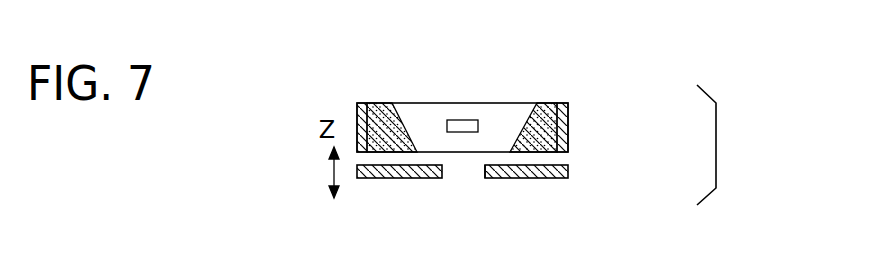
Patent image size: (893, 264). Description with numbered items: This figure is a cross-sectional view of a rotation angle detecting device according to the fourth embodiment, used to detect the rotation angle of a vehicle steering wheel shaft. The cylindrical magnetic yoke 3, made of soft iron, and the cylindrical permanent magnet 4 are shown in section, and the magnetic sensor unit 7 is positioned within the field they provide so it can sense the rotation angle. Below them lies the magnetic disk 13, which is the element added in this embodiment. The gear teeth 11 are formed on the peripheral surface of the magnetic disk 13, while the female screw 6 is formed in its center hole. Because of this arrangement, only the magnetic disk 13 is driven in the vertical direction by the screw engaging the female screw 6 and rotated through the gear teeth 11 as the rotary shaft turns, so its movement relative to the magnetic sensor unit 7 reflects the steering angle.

The cylindrical magnetic yoke 3 is at (568, 122).
The cylindrical permanent magnet 4 is at (548, 112).
The female screw 6 is at (486, 173).
The magnetic sensor unit 7 is at (463, 126).
The gear teeth 11 is at (568, 170).
The magnetic disk 13 is at (539, 173).